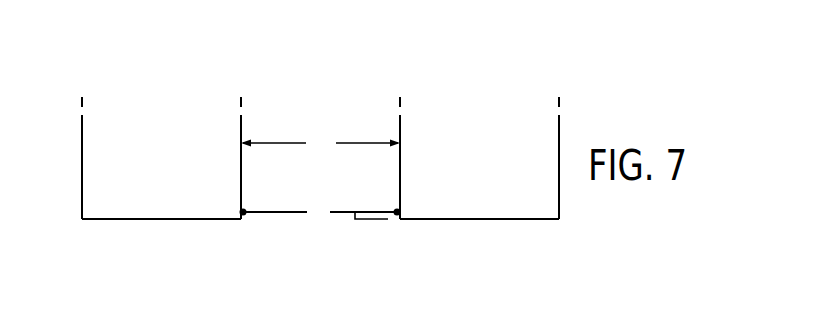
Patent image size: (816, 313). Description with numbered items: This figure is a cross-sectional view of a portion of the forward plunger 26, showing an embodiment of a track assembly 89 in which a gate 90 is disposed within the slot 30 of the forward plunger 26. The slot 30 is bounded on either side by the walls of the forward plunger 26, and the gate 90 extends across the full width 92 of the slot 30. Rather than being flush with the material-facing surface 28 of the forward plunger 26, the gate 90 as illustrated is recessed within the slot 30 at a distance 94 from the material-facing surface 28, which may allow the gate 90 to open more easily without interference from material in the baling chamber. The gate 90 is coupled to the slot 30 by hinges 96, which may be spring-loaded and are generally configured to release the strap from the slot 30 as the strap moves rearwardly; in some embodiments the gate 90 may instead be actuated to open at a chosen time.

The forward plunger 26 is at (148, 180).
The material-facing surface 28 is at (160, 221).
The slot 30 is at (275, 224).
The track assembly 89 is at (352, 97).
The gate 90 is at (368, 211).
The width 92 is at (320, 144).
The distance 94 is at (351, 220).
The hinges 96 is at (245, 209).